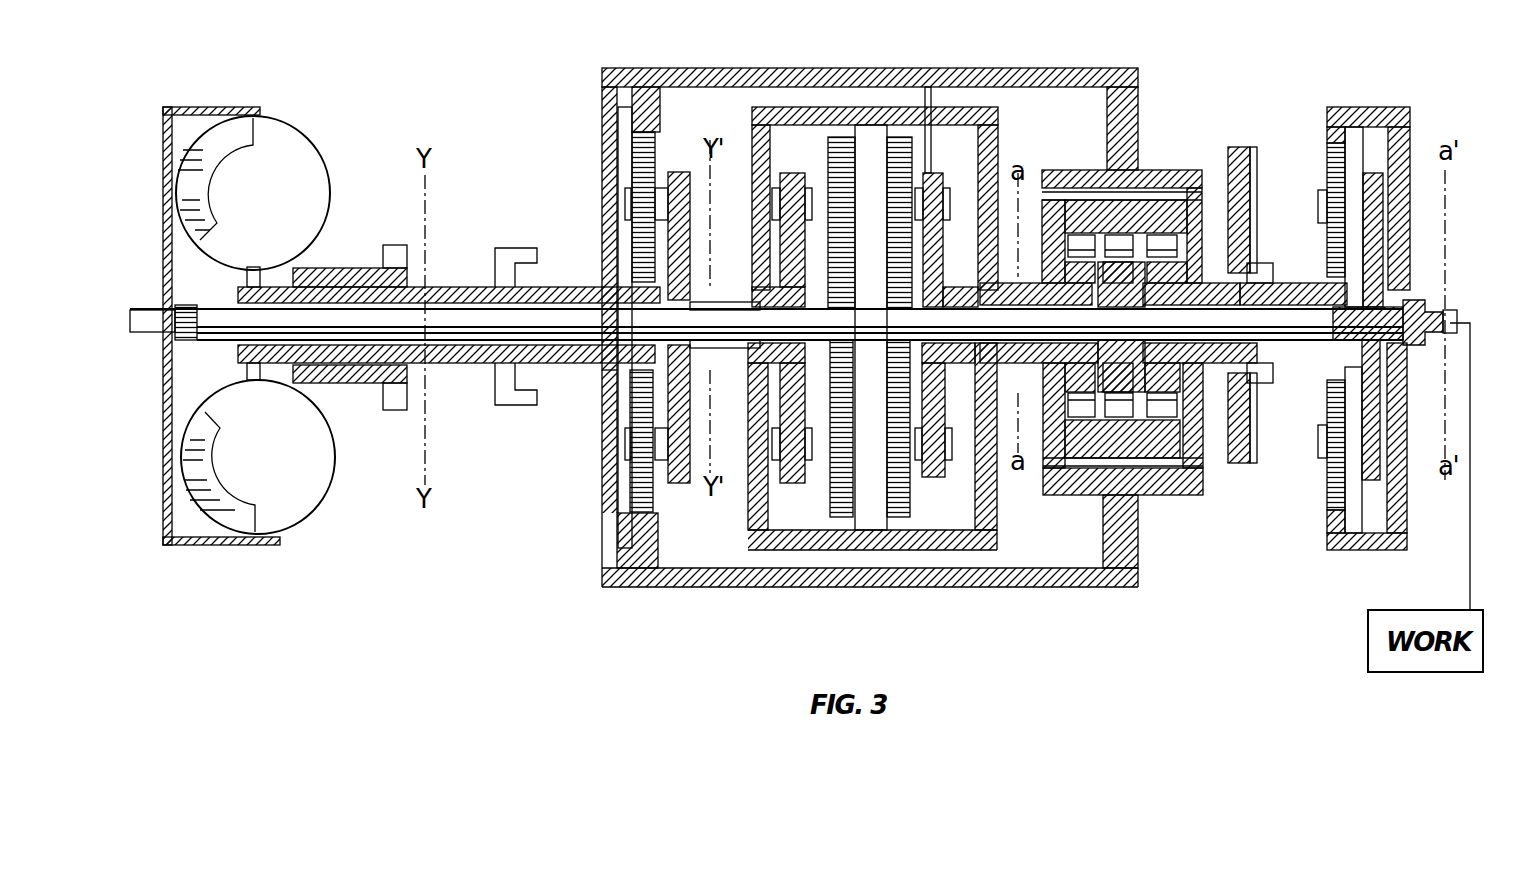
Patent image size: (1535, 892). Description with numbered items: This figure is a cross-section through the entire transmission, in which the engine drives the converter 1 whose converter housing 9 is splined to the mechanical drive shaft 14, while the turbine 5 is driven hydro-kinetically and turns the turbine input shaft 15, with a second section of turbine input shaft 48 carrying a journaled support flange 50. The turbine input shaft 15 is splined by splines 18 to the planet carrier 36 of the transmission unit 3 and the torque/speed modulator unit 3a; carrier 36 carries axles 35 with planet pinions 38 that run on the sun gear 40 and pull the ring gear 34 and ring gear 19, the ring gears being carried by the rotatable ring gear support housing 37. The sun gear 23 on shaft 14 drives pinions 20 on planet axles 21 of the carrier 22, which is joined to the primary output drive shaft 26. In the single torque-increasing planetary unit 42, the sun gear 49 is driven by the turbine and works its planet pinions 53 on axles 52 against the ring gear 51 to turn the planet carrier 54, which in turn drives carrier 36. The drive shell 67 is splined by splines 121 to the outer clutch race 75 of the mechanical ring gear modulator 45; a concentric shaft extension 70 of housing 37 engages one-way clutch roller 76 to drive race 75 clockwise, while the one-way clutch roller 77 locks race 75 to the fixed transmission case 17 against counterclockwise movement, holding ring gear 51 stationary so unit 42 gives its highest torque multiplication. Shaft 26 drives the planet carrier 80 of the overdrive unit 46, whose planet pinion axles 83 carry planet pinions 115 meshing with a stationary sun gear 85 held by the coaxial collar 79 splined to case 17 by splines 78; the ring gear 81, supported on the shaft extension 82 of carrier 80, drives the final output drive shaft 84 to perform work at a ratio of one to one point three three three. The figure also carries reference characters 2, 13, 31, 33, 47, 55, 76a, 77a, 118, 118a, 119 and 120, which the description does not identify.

The converter 1 is at (205, 550).
The stop block 2 is at (395, 412).
The variable delivery transmission 3 is at (923, 557).
The torque/speed modulator unit 3a is at (798, 557).
The turbine 5 is at (203, 194).
The converter housing 9 is at (305, 160).
The collar 13 is at (358, 268).
The mechanical drive shaft 14 is at (220, 327).
The turbine input shaft 15 is at (465, 363).
The transmission case 17 is at (1240, 147).
The splines 18 is at (714, 411).
The ring gear 19 is at (937, 120).
The pinions 20 is at (927, 152).
The planet axles 21 is at (997, 170).
The carrier 22 is at (933, 478).
The sun gear 23 is at (885, 350).
The primary output drive shaft 26 is at (960, 274).
The plate 31 is at (1030, 120).
The wall 33 is at (993, 120).
The ring gear 34 is at (812, 120).
The axles 35 is at (760, 178).
The planet carrier 36 is at (792, 441).
The rotatable ring gear support housing 37 is at (850, 125).
The planet pinions 38 is at (875, 120).
The sun gear 40 is at (850, 287).
The torque-increasing planetary unit 42 is at (610, 595).
The mechanical ring gear modulator 45 is at (1117, 595).
The overdrive unit 46 is at (1340, 557).
The bracket 47 is at (515, 243).
The second section of turbine input shaft 48 is at (568, 285).
The sun gear 49 is at (602, 393).
The support flange 50 is at (605, 418).
The ring gear 51 is at (605, 525).
The axles 52 is at (605, 455).
The planet pinions 53 is at (605, 490).
The planet carrier 54 is at (678, 490).
The hub 55 is at (723, 290).
The drive shell 67 is at (928, 87).
The concentric shaft extension 70 is at (1131, 370).
The outer clutch race 75 is at (1150, 230).
The one-way clutch roller 76 is at (1175, 240).
The clutch hub 76a is at (1112, 285).
The one-way clutch roller 77 is at (1253, 200).
The hub 77a is at (1308, 262).
The splines 78 is at (1272, 263).
The coaxial collar 79 is at (1325, 437).
The planet carrier 80 is at (1372, 107).
The ring gear 81 is at (1328, 142).
The shaft extension 82 is at (1398, 290).
The planet pinion axles 83 is at (1325, 478).
The final output drive shaft 84 is at (1445, 337).
The sun gear 85 is at (1323, 370).
The planet pinions 115 is at (1325, 510).
The clutch plate 118 is at (1267, 207).
The clutch core 118a is at (1097, 420).
The clutch plate 119 is at (1207, 445).
The housing wall 120 is at (1140, 93).
The splines 121 is at (1013, 490).